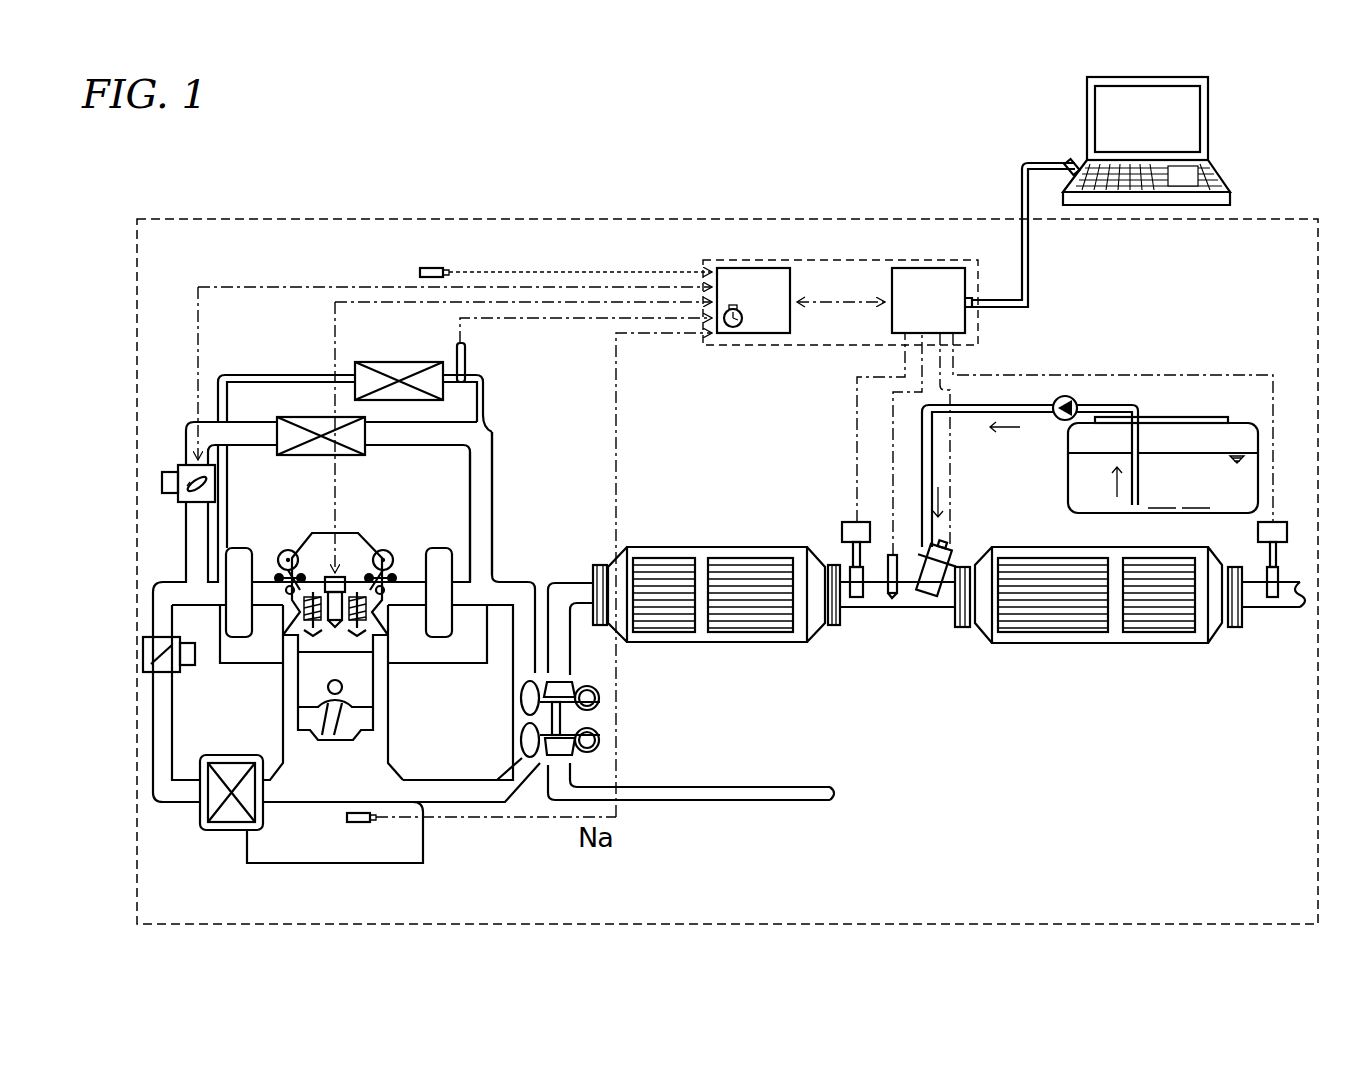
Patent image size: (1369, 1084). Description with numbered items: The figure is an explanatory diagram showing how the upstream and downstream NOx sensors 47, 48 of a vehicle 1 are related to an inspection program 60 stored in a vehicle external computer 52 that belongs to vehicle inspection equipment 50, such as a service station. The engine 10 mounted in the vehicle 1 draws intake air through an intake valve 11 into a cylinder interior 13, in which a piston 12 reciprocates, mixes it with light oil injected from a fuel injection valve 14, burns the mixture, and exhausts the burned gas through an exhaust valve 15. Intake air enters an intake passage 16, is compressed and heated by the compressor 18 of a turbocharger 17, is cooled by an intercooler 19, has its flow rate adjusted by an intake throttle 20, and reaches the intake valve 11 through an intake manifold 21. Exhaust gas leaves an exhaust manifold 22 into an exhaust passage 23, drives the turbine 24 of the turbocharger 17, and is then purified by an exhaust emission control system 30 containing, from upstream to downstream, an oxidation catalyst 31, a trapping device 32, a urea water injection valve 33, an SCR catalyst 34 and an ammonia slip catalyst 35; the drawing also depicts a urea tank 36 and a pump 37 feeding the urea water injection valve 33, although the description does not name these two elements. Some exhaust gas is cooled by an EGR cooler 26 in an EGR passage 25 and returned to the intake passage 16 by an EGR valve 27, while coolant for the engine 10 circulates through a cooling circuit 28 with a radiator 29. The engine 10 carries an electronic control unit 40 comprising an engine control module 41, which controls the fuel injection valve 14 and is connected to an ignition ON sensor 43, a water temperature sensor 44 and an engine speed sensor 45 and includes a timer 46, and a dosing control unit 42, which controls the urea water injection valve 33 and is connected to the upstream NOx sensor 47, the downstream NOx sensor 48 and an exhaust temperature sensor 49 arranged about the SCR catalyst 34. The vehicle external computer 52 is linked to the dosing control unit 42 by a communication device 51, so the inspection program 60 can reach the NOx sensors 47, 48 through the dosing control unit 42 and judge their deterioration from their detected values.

The vehicle 1 is at (200, 213).
The engine 10 is at (280, 325).
The intake valve 11 is at (300, 540).
The piston 12 is at (375, 680).
The cylinder interior 13 is at (300, 655).
The fuel injection valve 14 is at (344, 560).
The exhaust valve 15 is at (383, 560).
The intake passage 16 is at (770, 800).
The turbocharger 17 is at (541, 763).
The compressor 18 is at (520, 740).
The intercooler 19 is at (222, 830).
The intake throttle 20 is at (178, 672).
The intake manifold 21 is at (240, 548).
The exhaust manifold 22 is at (437, 548).
The exhaust passage 23 is at (492, 565).
The turbine 24 is at (520, 697).
The EGR passage 25 is at (237, 422).
The EGR cooler 26 is at (297, 418).
The EGR valve 27 is at (185, 463).
The cooling circuit 28 is at (490, 405).
The radiator 29 is at (385, 362).
The exhaust emission control system 30 is at (983, 642).
The oxidation catalyst 31 is at (665, 632).
The trapping device 32 is at (758, 632).
The urea water injection valve 33 is at (940, 600).
The selective catalytic reduction catalyst 34 is at (1045, 632).
The ammonia slip catalyst 35 is at (1158, 632).
The urea tank 36 is at (1240, 417).
The urea pump 37 is at (1067, 397).
The electronic control unit 40 is at (712, 262).
The engine control module 41 is at (755, 268).
The dosing control unit 42 is at (940, 268).
The ignition ON sensor 43 is at (428, 266).
The water temperature sensor 44 is at (466, 356).
The engine speed sensor 45 is at (358, 825).
The timer 46 is at (735, 328).
The upstream NOx sensor 47 is at (857, 597).
The downstream NOx sensor 48 is at (1273, 597).
The exhaust temperature sensor 49 is at (893, 597).
The vehicle inspection equipment 50 is at (1212, 147).
The communication device 51 is at (1022, 178).
The vehicle external computer 52 is at (1210, 107).
The inspection program 60 is at (1232, 186).